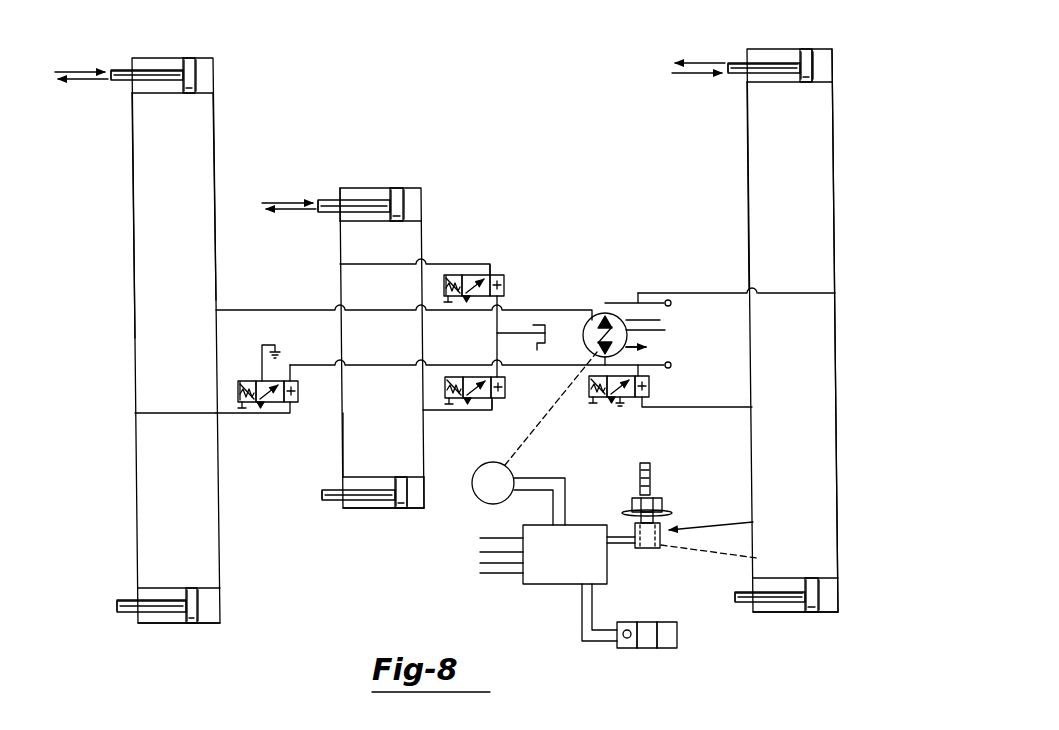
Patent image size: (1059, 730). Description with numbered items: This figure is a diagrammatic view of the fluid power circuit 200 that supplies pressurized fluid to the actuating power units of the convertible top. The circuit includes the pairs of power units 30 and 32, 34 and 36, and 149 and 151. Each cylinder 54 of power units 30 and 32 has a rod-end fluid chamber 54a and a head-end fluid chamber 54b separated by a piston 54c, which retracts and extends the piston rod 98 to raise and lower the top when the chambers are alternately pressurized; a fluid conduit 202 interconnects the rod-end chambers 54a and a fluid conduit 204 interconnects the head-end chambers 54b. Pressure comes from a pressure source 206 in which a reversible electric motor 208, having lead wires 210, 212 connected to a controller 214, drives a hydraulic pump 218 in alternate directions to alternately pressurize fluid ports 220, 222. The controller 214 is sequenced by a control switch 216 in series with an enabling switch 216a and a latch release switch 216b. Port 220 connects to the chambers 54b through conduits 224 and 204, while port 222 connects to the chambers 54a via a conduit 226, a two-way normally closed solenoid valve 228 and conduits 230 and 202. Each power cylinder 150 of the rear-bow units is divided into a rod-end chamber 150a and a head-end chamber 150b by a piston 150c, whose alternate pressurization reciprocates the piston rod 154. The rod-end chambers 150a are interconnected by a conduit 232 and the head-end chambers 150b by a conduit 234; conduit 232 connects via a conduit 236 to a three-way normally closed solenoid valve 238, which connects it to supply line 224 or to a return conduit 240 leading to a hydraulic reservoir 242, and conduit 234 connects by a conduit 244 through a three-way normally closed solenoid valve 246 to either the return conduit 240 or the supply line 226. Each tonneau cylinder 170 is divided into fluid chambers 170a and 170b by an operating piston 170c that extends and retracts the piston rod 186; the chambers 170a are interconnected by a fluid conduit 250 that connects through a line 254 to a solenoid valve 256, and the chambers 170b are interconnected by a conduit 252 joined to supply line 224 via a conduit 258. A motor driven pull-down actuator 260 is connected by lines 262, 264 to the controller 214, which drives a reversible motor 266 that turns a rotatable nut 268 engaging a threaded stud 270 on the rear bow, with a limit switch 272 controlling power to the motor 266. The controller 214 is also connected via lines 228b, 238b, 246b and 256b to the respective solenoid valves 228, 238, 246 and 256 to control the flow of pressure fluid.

The power unit 30 is at (168, 627).
The power unit 32 is at (203, 45).
The tonneau operating power unit 34 is at (797, 628).
The tonneau operating power unit 36 is at (820, 24).
The cylinder 54 is at (208, 623).
The rod-end fluid chamber 54a is at (133, 58).
The head-end fluid chamber 54b is at (204, 73).
The piston 54c is at (188, 92).
The piston rod 98 is at (128, 80).
The power unit 149 is at (378, 530).
The power cylinder 150 is at (408, 188).
The rod-end chamber 150a is at (352, 508).
The head-end chamber 150b is at (342, 187).
The piston 150c is at (391, 222).
The power unit 151 is at (423, 141).
The piston rod 154 is at (318, 213).
The cylinder 170 is at (805, 48).
The fluid chamber 170a is at (760, 82).
The fluid chamber 170b is at (822, 66).
The operating piston 170c is at (803, 84).
The piston rod 186 is at (778, 83).
The fluid power circuit 200 is at (568, 156).
The fluid conduit 202 is at (134, 338).
The fluid conduit 204 is at (216, 292).
The pressure source 206 is at (578, 396).
The reversible electric motor 208 is at (476, 488).
The lead wire 210 is at (548, 477).
The lead wire 212 is at (530, 492).
The controller 214 is at (558, 585).
The control switch 216 is at (622, 650).
The enabling switch 216a is at (648, 649).
The latch release switch 216b is at (677, 642).
The hydraulic pump 218 is at (590, 302).
The fluid port 220 is at (622, 302).
The fluid port 222 is at (628, 356).
The conduit 224 is at (527, 308).
The conduit 226 is at (527, 367).
The two-way normally closed solenoid valve 228 is at (291, 406).
The line 228b is at (248, 378).
The conduit 230 is at (158, 414).
The conduit 232 is at (322, 390).
The conduit 234 is at (425, 262).
The conduit 236 is at (496, 262).
The three-way normally closed solenoid valve 238 is at (494, 268).
The line 238b is at (482, 553).
The return conduit 240 is at (497, 338).
The hydraulic reservoir 242 is at (560, 343).
The conduit 244 is at (466, 412).
The three-way normally closed solenoid valve 246 is at (490, 414).
The line 246b is at (490, 565).
The fluid conduit 250 is at (747, 151).
The conduit 252 is at (836, 392).
The line 254 is at (677, 406).
The solenoid valve 256 is at (626, 402).
The line 256b is at (508, 575).
The conduit 258 is at (787, 294).
The motor driven pull-down actuator 260 is at (753, 522).
The line 262 is at (615, 535).
The line 264 is at (618, 548).
The reversible motor 266 is at (648, 550).
The rotatable nut 268 is at (662, 505).
The threaded stud 270 is at (651, 470).
The limit switch 272 is at (735, 555).